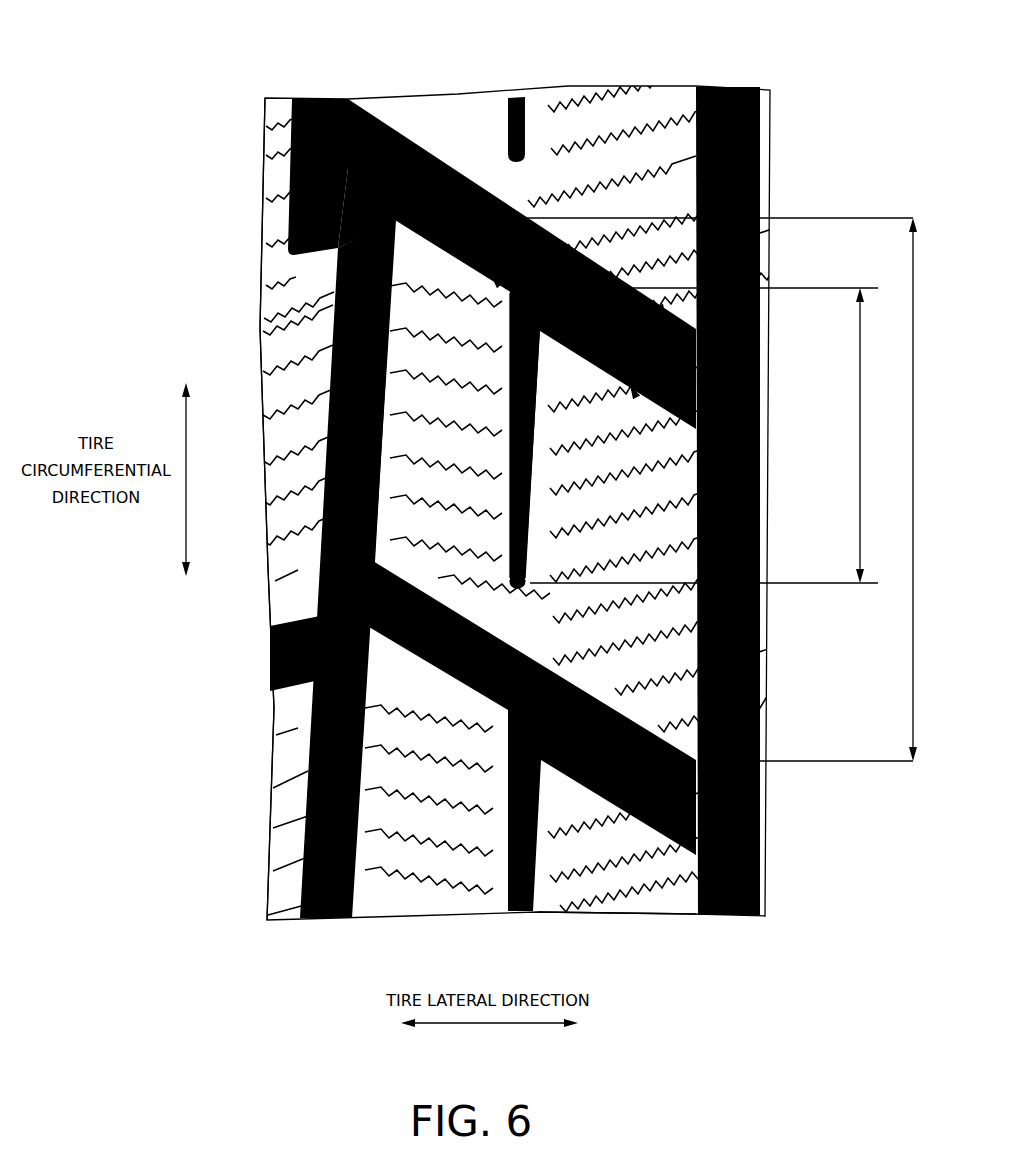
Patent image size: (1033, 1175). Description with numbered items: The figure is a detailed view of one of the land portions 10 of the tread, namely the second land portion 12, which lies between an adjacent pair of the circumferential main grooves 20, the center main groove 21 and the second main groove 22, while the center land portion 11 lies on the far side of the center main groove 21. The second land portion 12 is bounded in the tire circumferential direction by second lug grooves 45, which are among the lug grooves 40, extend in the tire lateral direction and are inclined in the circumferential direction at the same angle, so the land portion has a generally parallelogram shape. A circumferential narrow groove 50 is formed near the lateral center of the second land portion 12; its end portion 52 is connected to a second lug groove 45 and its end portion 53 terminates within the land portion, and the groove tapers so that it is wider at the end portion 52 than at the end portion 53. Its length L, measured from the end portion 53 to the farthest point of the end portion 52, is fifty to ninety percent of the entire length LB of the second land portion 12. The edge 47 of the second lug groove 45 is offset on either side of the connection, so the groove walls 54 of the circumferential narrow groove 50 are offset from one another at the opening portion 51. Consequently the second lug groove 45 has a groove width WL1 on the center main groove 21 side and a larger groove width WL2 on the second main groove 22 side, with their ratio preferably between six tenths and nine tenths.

The land portion 10 is at (507, 509).
The center land portion 11 is at (268, 118).
The second land portion 12 is at (660, 643).
The circumferential main groove 20 is at (529, 471).
The center main groove 21 is at (312, 108).
The second main groove 22 is at (720, 104).
The lug groove 40 is at (517, 228).
The second lug groove 45 is at (417, 160).
The edge 47 is at (455, 252).
The circumferential narrow groove 50 is at (502, 493).
The opening portion 51 is at (520, 300).
The end portion 52 is at (490, 300).
The end portion 53 is at (507, 580).
The groove wall 54 is at (503, 433).
The groove width WL1 is at (516, 224).
The groove width WL2 is at (640, 343).
The length L is at (691, 435).
The entire length LB is at (658, 489).